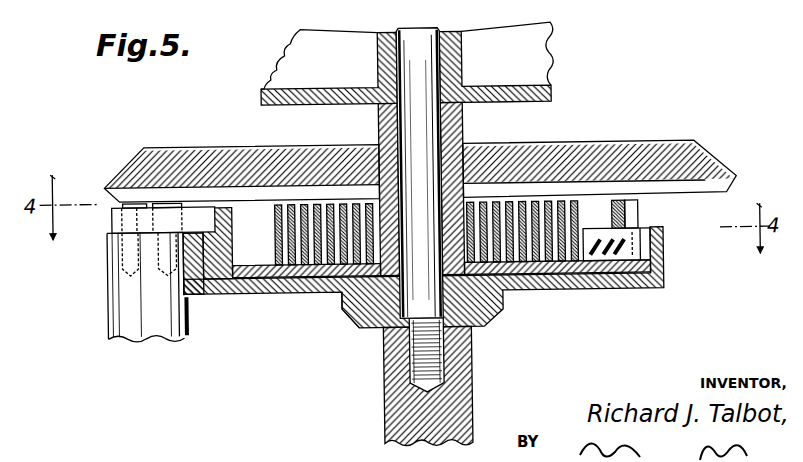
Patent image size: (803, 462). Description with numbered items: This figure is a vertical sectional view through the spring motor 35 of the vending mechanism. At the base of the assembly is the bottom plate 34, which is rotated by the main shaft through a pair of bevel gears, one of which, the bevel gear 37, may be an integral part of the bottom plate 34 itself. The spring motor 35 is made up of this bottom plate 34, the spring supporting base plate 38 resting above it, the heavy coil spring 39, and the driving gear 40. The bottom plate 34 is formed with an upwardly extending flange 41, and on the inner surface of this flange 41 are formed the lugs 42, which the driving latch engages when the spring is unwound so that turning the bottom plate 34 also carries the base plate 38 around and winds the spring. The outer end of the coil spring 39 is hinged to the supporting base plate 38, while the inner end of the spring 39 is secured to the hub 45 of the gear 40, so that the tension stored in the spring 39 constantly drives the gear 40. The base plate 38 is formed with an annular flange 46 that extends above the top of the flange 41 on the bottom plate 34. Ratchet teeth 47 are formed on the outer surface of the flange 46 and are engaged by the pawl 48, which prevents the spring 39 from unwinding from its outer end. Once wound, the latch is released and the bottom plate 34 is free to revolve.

The bottom plate 34 is at (604, 291).
The spring motor 35 is at (673, 103).
The bevel gear 37 is at (354, 312).
The spring supporting base plate 38 is at (221, 275).
The heavy coil spring 39 is at (285, 233).
The driving gear 40 is at (595, 164).
The upwardly extending flange 41 is at (663, 247).
The lugs 42 is at (665, 271).
The hub 45 is at (457, 212).
The annular flange 46 is at (224, 248).
The ratchet teeth 47 is at (212, 203).
The pawl 48 is at (143, 214).